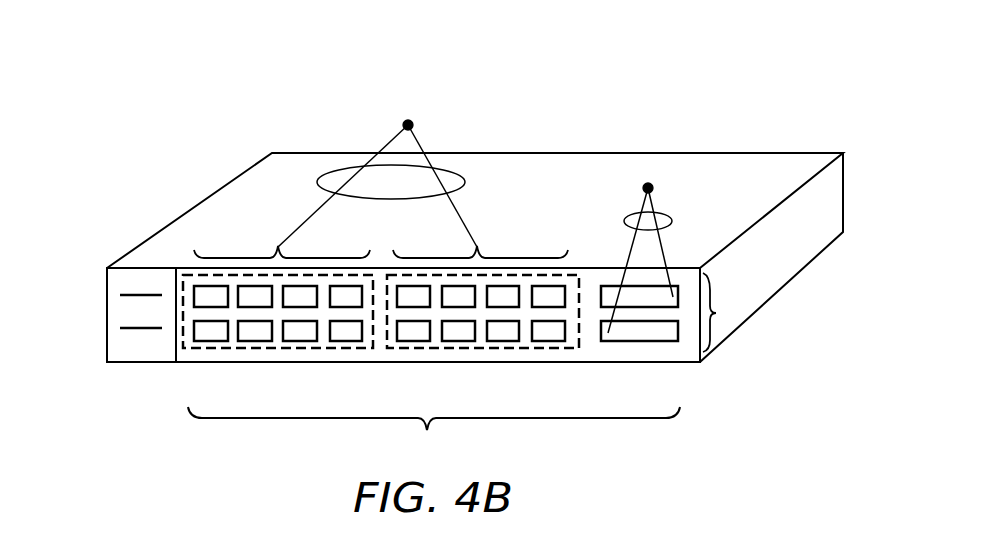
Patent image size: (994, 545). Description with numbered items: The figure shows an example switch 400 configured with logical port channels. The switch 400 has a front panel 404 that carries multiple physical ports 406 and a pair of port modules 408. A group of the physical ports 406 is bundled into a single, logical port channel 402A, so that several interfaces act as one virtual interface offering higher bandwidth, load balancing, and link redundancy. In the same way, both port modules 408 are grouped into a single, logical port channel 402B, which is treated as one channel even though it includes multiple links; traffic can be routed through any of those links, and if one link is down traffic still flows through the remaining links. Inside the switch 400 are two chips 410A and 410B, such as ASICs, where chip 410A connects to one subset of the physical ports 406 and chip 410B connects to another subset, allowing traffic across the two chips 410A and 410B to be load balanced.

The switch 400 is at (572, 72).
The logical port channel 402A is at (405, 125).
The logical port channel 402B is at (717, 187).
The front panel 404 is at (115, 309).
The physical ports 406 is at (578, 443).
The port modules 408 is at (716, 313).
The chip 410A is at (278, 349).
The chip 410B is at (477, 349).